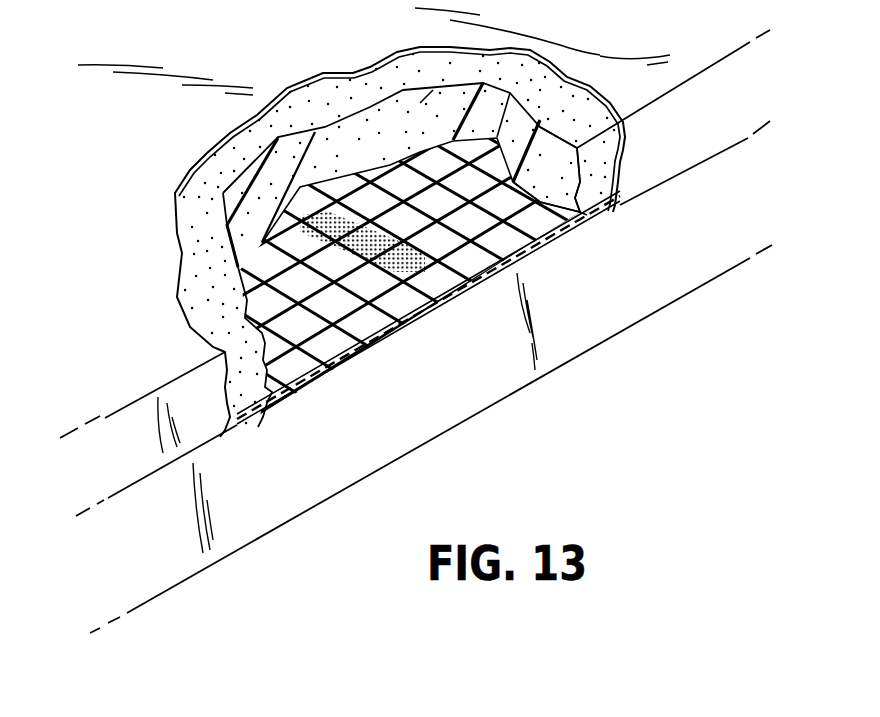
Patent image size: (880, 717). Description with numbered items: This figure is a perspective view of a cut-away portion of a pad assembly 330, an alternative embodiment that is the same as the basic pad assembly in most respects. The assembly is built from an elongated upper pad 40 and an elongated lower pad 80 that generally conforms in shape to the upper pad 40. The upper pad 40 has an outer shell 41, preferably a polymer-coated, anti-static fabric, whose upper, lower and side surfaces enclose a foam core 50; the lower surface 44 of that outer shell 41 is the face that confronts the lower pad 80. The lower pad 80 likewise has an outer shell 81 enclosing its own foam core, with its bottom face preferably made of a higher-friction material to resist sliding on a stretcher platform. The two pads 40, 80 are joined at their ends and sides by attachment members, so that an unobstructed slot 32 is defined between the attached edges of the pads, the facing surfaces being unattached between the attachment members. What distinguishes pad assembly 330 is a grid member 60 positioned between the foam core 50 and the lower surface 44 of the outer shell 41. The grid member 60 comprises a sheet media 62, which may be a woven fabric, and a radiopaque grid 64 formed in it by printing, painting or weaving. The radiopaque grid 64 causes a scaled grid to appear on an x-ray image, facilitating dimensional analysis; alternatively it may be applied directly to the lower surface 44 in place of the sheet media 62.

The pad assembly 330 is at (146, 185).
The upper pad 40 is at (706, 133).
The outer shell 41 is at (665, 155).
The lower pad 80 is at (701, 257).
The outer shell 81 is at (652, 283).
The foam core 50 is at (558, 173).
The radiopaque grid 64 is at (518, 267).
The sheet media 62 is at (447, 307).
The grid member 60 is at (440, 341).
The lower surface 44 is at (373, 353).
The slot 32 is at (157, 473).